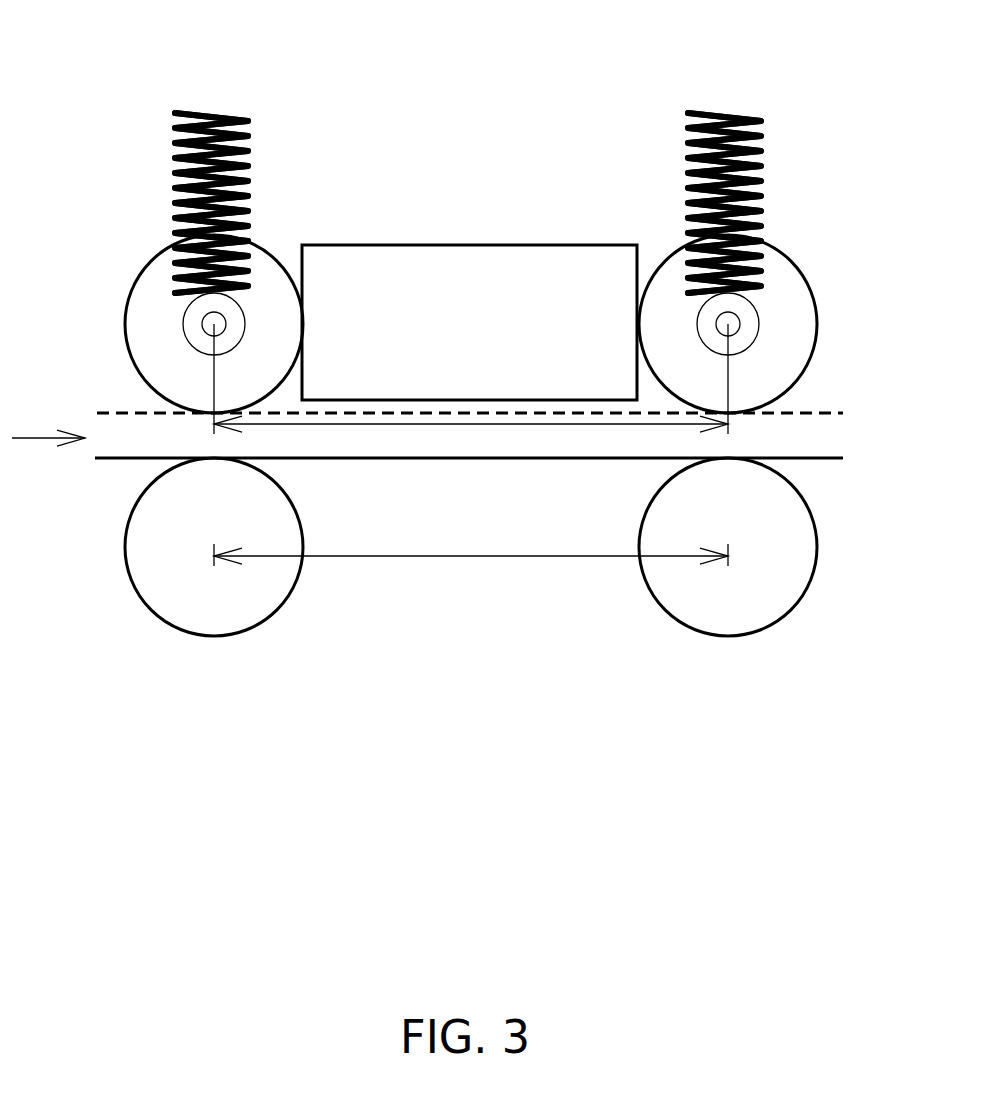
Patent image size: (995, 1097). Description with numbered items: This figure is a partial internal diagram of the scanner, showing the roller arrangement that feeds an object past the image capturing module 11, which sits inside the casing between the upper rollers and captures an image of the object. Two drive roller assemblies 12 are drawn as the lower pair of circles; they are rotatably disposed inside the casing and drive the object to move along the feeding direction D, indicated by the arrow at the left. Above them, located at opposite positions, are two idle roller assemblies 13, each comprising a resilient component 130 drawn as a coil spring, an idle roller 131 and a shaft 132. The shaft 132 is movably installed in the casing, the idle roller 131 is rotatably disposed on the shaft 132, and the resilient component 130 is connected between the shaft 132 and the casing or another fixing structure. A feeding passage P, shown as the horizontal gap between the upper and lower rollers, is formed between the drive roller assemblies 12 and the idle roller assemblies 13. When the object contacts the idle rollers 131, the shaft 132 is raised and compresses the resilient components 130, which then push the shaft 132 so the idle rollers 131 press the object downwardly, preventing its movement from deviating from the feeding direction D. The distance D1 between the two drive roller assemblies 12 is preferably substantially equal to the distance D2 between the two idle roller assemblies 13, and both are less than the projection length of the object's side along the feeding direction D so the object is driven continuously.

The image capturing module 11 is at (487, 290).
The drive roller assembly 12 is at (300, 634).
The idle roller assembly 13 is at (112, 160).
The resilient component 130 is at (218, 118).
The idle roller 131 is at (160, 285).
The shaft 132 is at (195, 335).
The feeding passage P is at (820, 432).
The feeding direction D is at (48, 453).
The distance between the two drive roller assemblies D1 is at (471, 543).
The distance between the two idle roller assemblies D2 is at (471, 391).